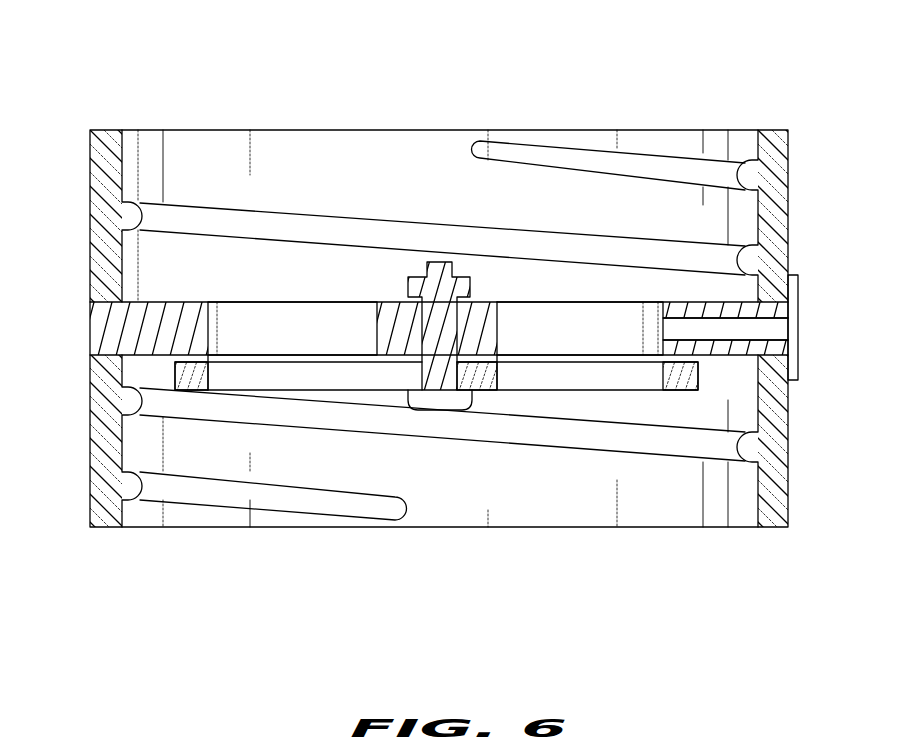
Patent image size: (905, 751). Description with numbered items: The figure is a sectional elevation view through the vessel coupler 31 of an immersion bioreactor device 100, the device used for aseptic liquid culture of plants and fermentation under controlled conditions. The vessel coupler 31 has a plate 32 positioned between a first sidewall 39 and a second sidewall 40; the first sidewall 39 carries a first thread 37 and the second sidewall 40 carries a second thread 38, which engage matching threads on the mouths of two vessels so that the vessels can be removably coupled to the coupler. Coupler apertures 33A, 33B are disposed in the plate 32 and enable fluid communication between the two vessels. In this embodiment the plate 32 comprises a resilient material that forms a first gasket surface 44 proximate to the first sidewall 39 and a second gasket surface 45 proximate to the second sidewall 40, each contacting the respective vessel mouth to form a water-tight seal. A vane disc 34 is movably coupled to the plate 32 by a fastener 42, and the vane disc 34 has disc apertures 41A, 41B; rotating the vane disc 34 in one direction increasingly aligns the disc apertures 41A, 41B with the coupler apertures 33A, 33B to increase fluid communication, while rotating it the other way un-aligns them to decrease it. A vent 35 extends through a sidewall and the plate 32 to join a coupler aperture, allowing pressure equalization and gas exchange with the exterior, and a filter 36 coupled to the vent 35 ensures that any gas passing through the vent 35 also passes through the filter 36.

The immersion bioreactor device 100 is at (168, 84).
The vessel coupler 31 is at (790, 130).
The plate 32 is at (172, 336).
The coupler aperture 33A is at (298, 312).
The coupler aperture 33B is at (605, 312).
The vane disc 34 is at (200, 375).
The vent 35 is at (775, 328).
The filter 36 is at (793, 300).
The first thread 37 is at (270, 220).
The second thread 38 is at (312, 502).
The first sidewall 39 is at (135, 215).
The second sidewall 40 is at (770, 493).
The disc aperture 41A is at (318, 383).
The disc aperture 41B is at (520, 383).
The fastener 42 is at (408, 284).
The first gasket surface 44 is at (136, 294).
The second gasket surface 45 is at (745, 366).